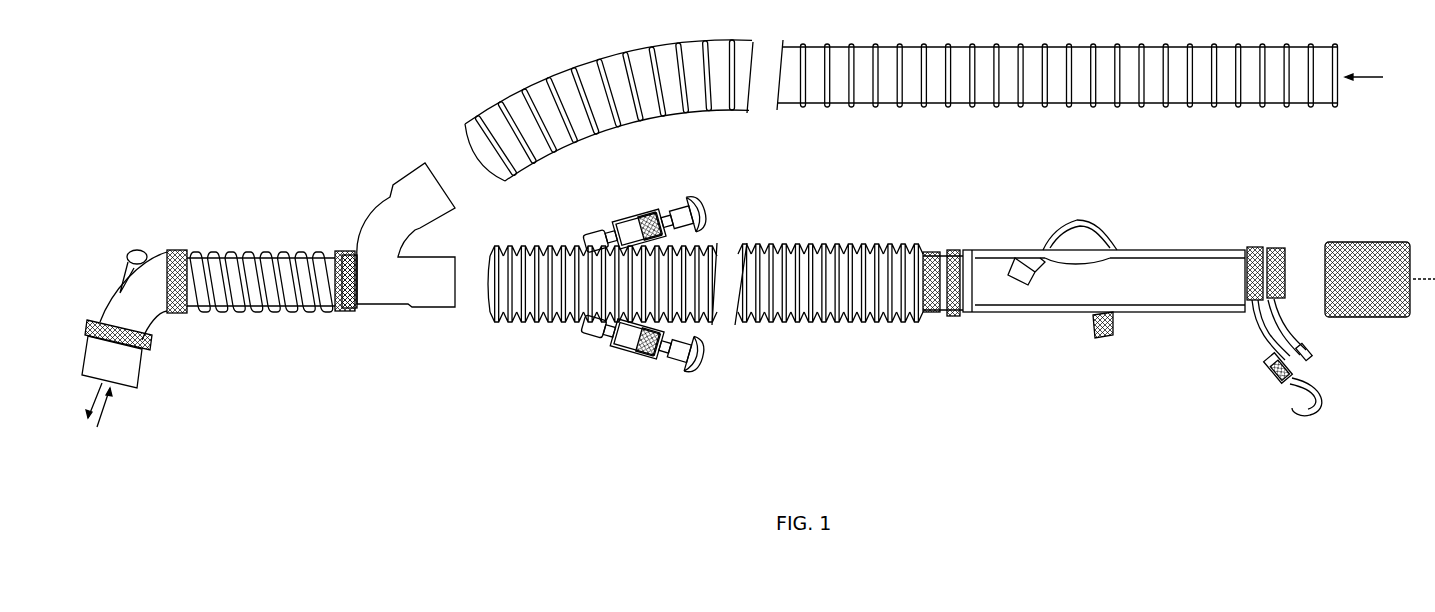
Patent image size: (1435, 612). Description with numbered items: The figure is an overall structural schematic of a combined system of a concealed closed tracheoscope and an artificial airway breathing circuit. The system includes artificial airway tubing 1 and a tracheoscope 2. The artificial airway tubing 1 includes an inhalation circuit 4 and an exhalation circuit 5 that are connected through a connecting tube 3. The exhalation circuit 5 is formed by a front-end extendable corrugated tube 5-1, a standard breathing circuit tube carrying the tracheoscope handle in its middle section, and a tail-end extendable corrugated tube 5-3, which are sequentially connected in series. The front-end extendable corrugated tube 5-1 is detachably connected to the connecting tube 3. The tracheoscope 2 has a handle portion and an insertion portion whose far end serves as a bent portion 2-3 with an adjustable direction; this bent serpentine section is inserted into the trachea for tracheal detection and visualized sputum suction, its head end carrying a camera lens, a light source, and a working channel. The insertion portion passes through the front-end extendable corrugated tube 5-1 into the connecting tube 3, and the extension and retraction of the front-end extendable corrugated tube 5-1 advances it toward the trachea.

The artificial airway tubing 1 is at (346, 228).
The tracheoscope 2 is at (1142, 317).
The connecting tube 3 is at (243, 300).
The inhalation circuit 4 is at (873, 105).
The exhalation circuit 5 is at (602, 302).
The bent portion 2-3 is at (625, 298).
The front-end extendable corrugated tube 5-1 is at (840, 318).
The tail-end extendable corrugated tube 5-3 is at (1370, 312).